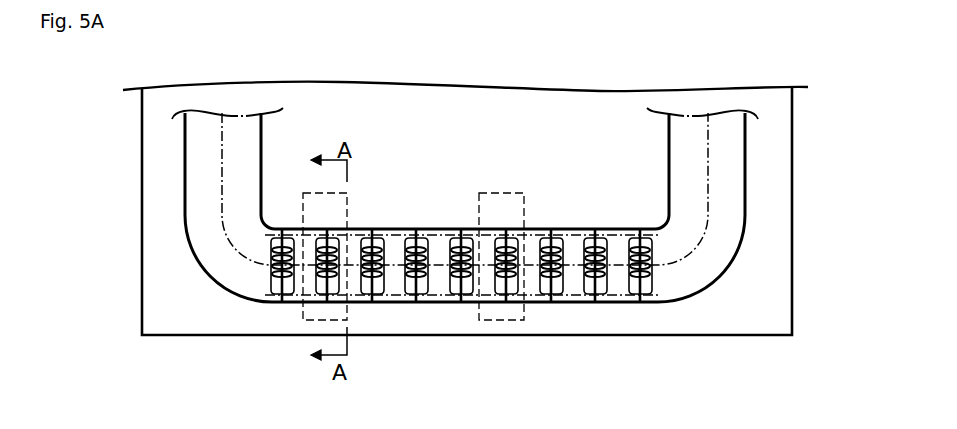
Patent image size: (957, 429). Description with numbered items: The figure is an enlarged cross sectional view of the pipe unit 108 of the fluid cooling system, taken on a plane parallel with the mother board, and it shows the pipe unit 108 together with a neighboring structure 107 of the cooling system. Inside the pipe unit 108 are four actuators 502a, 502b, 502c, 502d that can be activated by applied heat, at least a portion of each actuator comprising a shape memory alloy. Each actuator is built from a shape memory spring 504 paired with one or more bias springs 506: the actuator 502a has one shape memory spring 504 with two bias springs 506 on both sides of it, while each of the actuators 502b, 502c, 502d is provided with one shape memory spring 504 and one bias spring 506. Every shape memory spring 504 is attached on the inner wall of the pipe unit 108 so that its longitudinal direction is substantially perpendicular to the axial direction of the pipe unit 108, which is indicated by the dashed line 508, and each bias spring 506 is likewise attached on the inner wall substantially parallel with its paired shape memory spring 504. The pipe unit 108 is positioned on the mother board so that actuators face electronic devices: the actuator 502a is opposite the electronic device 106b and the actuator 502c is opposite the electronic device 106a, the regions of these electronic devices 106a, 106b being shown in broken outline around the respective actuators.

The housing 107 is at (158, 228).
The pipe unit 108 is at (185, 150).
The dashed line 508 is at (697, 259).
The actuator 502a is at (263, 238).
The actuator 502b is at (399, 224).
The actuator 502c is at (483, 193).
The actuator 502d is at (574, 235).
The shape memory spring 504 is at (321, 288).
The bias spring 506 is at (275, 287).
The electronic device 106a is at (523, 191).
The electronic device 106b is at (349, 214).